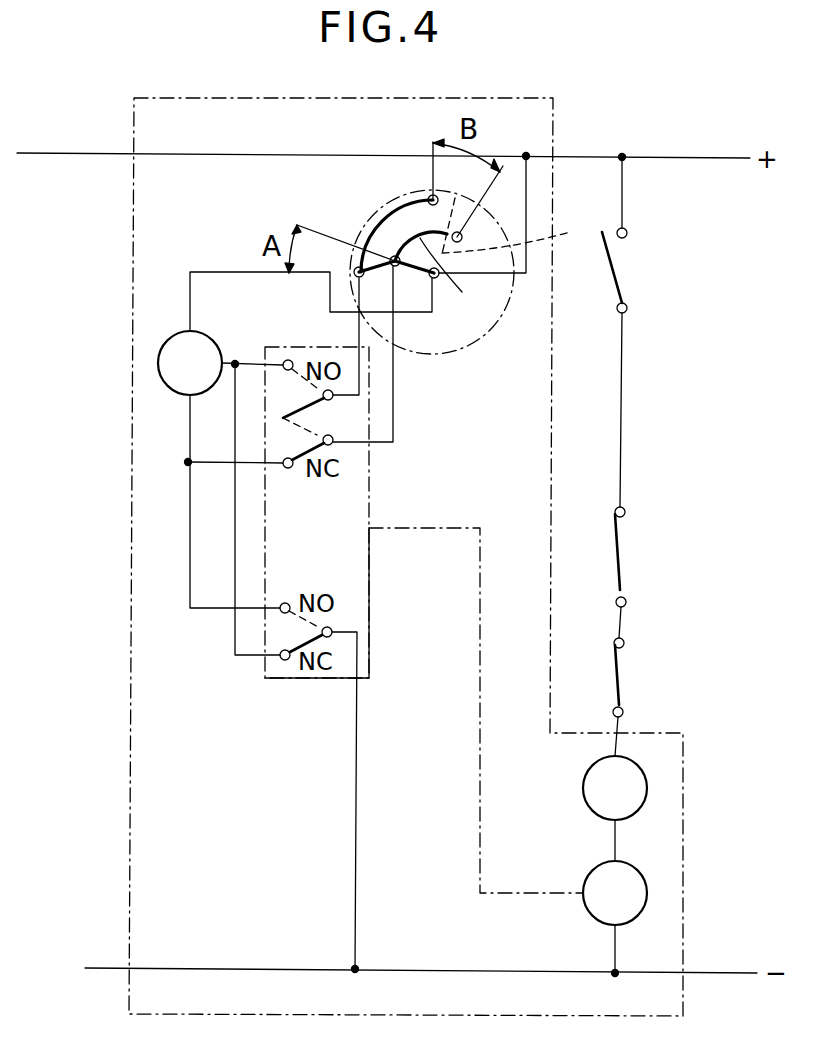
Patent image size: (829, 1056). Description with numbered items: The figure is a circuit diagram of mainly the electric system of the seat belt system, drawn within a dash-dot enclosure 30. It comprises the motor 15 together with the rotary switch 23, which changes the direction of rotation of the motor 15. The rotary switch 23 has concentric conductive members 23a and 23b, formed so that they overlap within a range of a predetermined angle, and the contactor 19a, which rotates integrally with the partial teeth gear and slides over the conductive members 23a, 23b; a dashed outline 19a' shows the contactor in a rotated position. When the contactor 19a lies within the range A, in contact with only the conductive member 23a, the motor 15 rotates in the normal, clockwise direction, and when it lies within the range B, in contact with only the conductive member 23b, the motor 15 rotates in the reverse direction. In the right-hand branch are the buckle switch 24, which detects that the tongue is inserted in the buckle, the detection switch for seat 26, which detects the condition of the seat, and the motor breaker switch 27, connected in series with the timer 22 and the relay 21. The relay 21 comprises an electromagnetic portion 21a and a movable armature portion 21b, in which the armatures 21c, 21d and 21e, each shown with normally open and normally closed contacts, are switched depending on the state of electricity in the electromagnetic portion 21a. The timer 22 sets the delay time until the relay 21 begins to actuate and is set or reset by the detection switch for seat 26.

The control circuit enclosure 30 is at (120, 98).
The motor 15 is at (157, 362).
The relay 21 is at (313, 683).
The electromagnetic portion 21a is at (642, 915).
The movable armature portion 21b is at (368, 677).
The armature 21c is at (317, 413).
The armature 21d is at (302, 465).
The armature 21e is at (303, 633).
The timer 22 is at (647, 792).
The rotary switch 23 is at (352, 232).
The conductive member 23a is at (398, 203).
The conductive member 23b is at (440, 257).
The contactor 19a is at (441, 315).
The wiper contact in rotated position 19a' is at (528, 222).
The buckle switch 24 is at (624, 285).
The detection switch for seat 26 is at (622, 570).
The motor breaker switch 27 is at (623, 690).